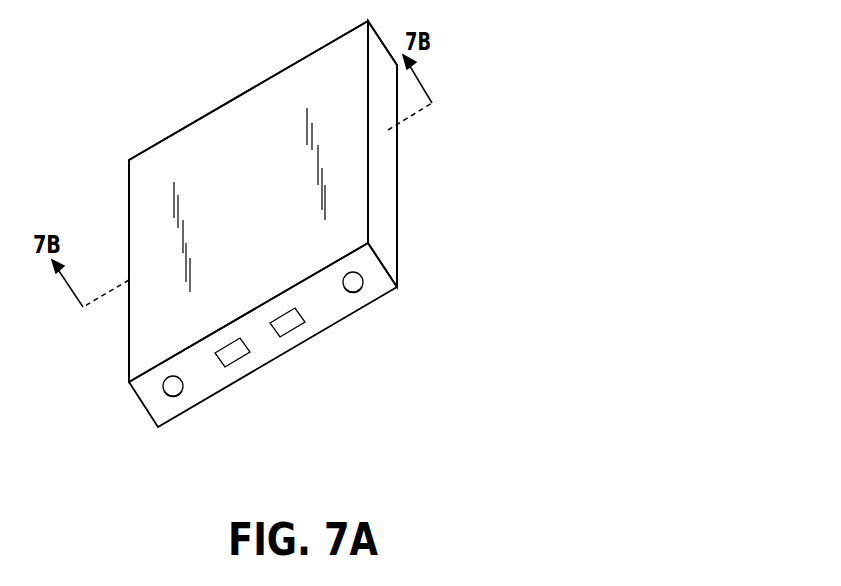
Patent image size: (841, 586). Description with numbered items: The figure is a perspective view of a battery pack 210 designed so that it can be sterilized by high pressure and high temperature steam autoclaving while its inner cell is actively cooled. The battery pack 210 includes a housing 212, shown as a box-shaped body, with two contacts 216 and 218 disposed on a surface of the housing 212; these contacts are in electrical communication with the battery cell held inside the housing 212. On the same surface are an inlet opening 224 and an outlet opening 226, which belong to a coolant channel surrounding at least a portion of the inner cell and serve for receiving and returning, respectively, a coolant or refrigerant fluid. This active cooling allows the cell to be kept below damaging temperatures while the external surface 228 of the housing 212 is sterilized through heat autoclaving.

The battery pack 210 is at (399, 156).
The housing 212 is at (242, 115).
The contact 216 is at (288, 320).
The contact 218 is at (237, 352).
The inlet opening 224 is at (353, 292).
The outlet opening 226 is at (173, 390).
The external surface 228 is at (383, 193).